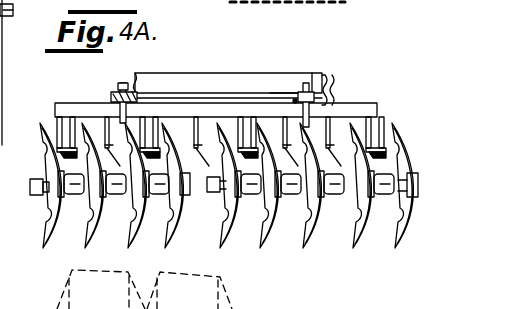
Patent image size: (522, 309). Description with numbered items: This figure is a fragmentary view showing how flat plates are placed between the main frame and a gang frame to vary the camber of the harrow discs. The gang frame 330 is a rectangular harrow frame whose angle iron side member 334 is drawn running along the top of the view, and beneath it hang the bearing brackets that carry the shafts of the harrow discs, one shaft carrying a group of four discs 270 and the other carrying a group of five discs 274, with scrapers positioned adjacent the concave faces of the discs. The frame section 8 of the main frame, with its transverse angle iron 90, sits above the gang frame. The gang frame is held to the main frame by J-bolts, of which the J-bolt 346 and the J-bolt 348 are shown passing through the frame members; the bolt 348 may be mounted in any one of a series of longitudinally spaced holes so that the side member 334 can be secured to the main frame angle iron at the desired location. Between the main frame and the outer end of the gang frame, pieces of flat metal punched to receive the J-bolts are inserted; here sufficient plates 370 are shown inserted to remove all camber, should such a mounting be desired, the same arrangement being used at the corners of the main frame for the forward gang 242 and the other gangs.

The frame section 8 is at (208, 72).
The transverse angle iron 90 is at (242, 82).
The angle iron side member 334 is at (77, 108).
The harrow frame 330 is at (354, 101).
The J-bolt 346 is at (305, 83).
The J-bolt 348 is at (124, 83).
The plates 370 is at (116, 98).
The discs 270 is at (62, 225).
The discs 274 is at (308, 232).
The forward gang 242 is at (393, 243).